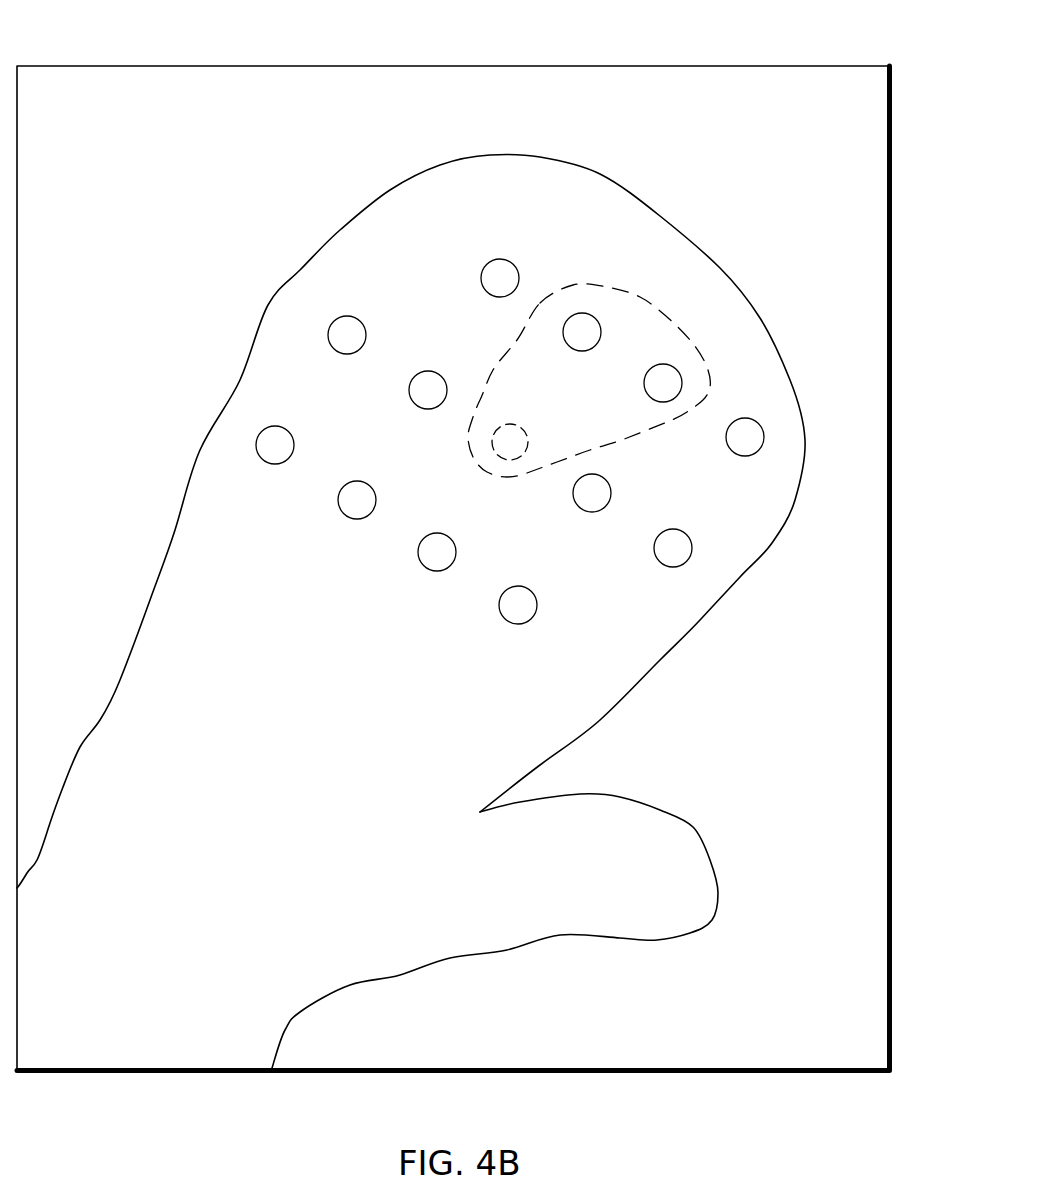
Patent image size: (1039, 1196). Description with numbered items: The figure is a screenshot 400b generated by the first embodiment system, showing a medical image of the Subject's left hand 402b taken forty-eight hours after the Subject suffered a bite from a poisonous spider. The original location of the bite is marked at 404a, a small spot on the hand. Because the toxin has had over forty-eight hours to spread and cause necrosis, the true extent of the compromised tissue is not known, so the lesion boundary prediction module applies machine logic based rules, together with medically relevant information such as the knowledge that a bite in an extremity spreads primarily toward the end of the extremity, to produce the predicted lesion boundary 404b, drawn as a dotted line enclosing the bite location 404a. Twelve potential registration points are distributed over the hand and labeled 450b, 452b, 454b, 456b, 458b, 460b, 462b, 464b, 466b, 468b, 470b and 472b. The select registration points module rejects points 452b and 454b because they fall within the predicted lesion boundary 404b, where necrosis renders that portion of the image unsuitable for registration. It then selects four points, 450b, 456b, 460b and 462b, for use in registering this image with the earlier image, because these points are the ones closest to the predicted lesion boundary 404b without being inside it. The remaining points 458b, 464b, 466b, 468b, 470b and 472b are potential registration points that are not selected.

The screenshot 400b is at (46, 66).
The Subject's left hand 402b is at (268, 305).
The predicted lesion boundary 404b is at (665, 314).
The original location of the bite 404a is at (494, 453).
The potential registration point 450b is at (486, 291).
The potential registration point 452b is at (568, 345).
The potential registration point 454b is at (653, 400).
The potential registration point 456b is at (731, 450).
The potential registration point 458b is at (333, 348).
The potential registration point 460b is at (414, 403).
The potential registration point 462b is at (578, 506).
The potential registration point 464b is at (655, 552).
The potential registration point 466b is at (261, 458).
The potential registration point 468b is at (343, 513).
The potential registration point 470b is at (423, 565).
The potential registration point 472b is at (504, 618).